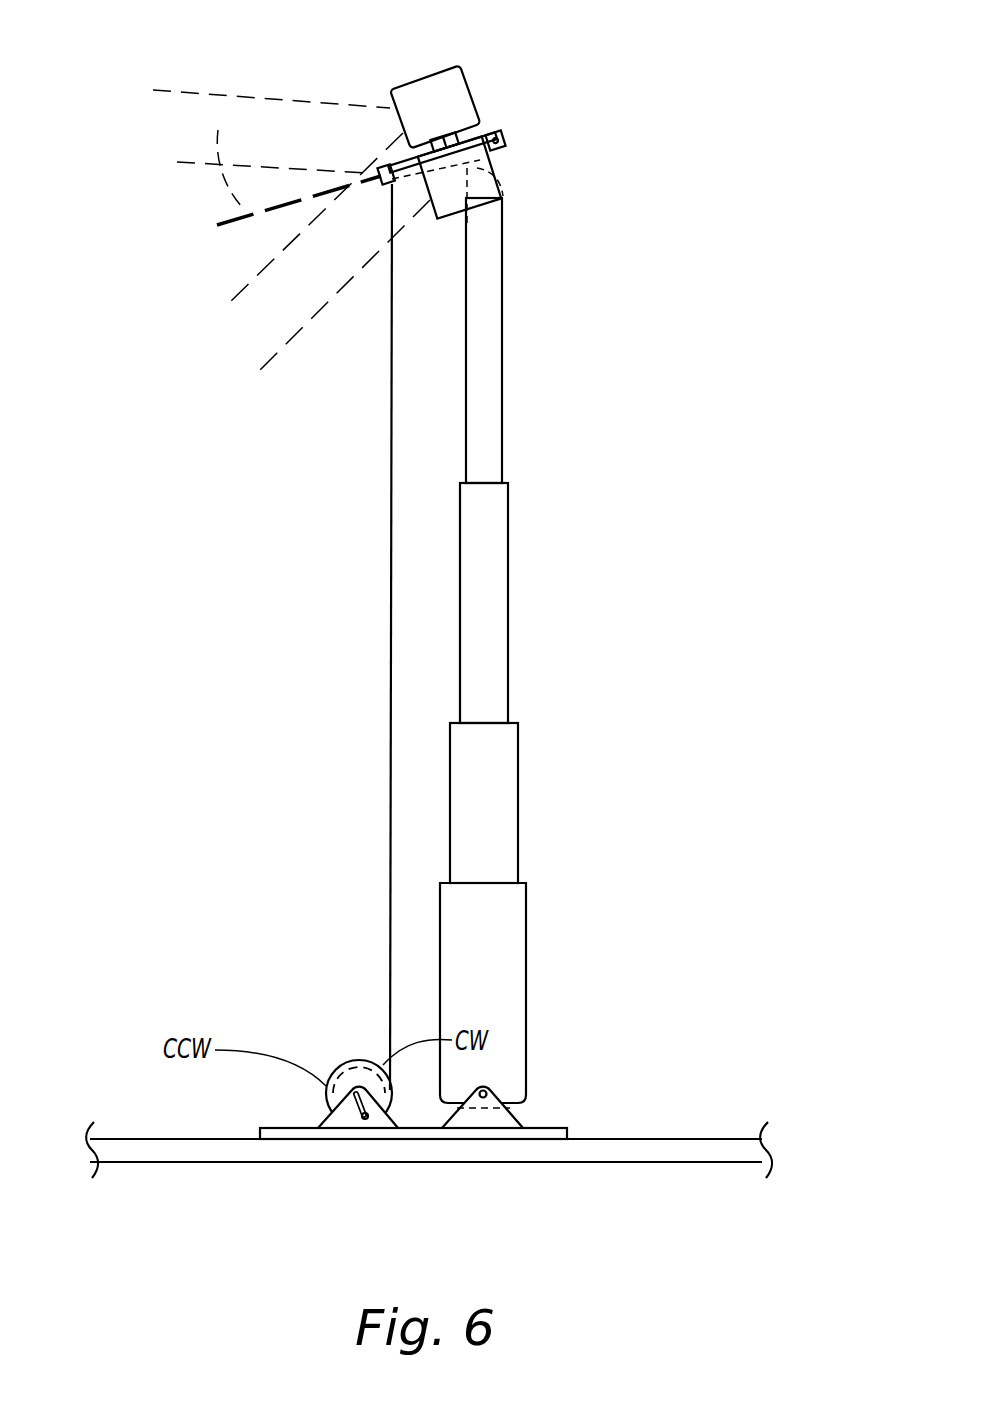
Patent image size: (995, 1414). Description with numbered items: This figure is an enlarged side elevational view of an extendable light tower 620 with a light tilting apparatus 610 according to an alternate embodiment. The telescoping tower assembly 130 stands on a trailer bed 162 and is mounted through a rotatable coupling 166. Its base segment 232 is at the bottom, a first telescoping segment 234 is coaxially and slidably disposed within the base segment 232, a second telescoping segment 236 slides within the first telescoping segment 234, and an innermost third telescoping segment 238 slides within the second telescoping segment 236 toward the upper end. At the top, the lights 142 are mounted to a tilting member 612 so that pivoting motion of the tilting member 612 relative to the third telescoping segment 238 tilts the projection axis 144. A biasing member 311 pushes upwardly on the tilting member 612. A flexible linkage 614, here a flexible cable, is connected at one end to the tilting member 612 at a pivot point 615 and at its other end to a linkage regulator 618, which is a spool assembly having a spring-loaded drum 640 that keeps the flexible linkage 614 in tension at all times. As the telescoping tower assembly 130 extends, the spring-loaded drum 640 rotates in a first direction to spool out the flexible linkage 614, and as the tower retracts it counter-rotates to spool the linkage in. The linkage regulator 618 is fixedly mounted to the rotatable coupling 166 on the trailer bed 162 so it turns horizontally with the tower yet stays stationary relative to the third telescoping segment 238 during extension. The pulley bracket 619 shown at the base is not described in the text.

The lights 142 is at (422, 75).
The pivot point 615 is at (386, 158).
The projection axis 144 is at (271, 150).
The tilting member 612 is at (383, 184).
The biasing member 311 is at (512, 205).
The third telescoping segment 238 is at (503, 325).
The light tilting apparatus 610 is at (214, 343).
The flexible linkage 614 is at (392, 527).
The telescoping tower assembly 130 is at (674, 492).
The extendable light tower 620 is at (158, 505).
The second telescoping segment 236 is at (508, 617).
The first telescoping segment 234 is at (518, 806).
The base segment 232 is at (526, 993).
The spring-loaded drum 640 is at (363, 1062).
The linkage regulator 618 is at (333, 1073).
The rotatable coupling 166 is at (283, 1128).
The pulley bracket 619 is at (357, 1109).
The trailer bed 162 is at (687, 1163).